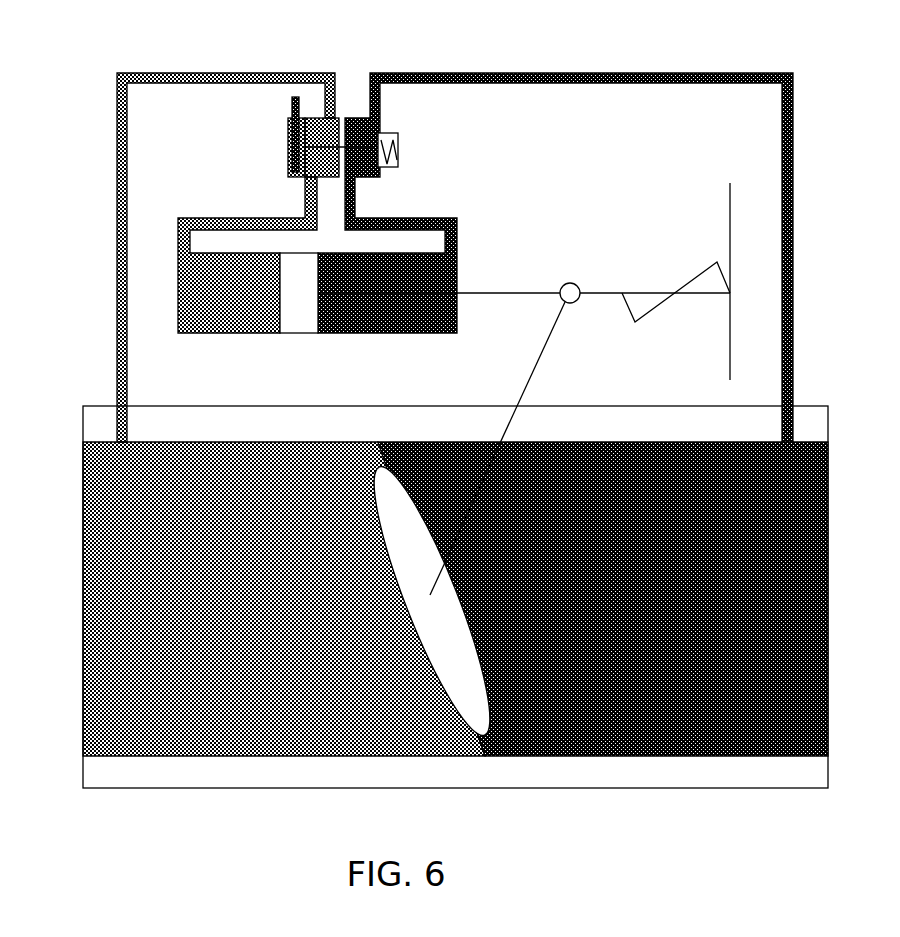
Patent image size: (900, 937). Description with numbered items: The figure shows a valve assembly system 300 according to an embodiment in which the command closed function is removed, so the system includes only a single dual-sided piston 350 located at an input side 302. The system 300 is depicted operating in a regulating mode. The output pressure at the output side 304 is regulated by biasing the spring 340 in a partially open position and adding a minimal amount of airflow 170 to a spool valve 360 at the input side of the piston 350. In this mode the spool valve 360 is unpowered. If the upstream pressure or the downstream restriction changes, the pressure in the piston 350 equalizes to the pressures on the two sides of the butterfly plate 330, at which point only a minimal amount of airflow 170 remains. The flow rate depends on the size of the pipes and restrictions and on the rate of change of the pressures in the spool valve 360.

The valve assembly system 300 is at (514, 48).
The airflow 170 is at (292, 98).
The spool valve 360 is at (378, 152).
The dual-sided piston 350 is at (440, 218).
The spring 340 is at (697, 273).
The butterfly plate 330 is at (448, 647).
The input side 302 is at (38, 624).
The output side 304 is at (847, 547).